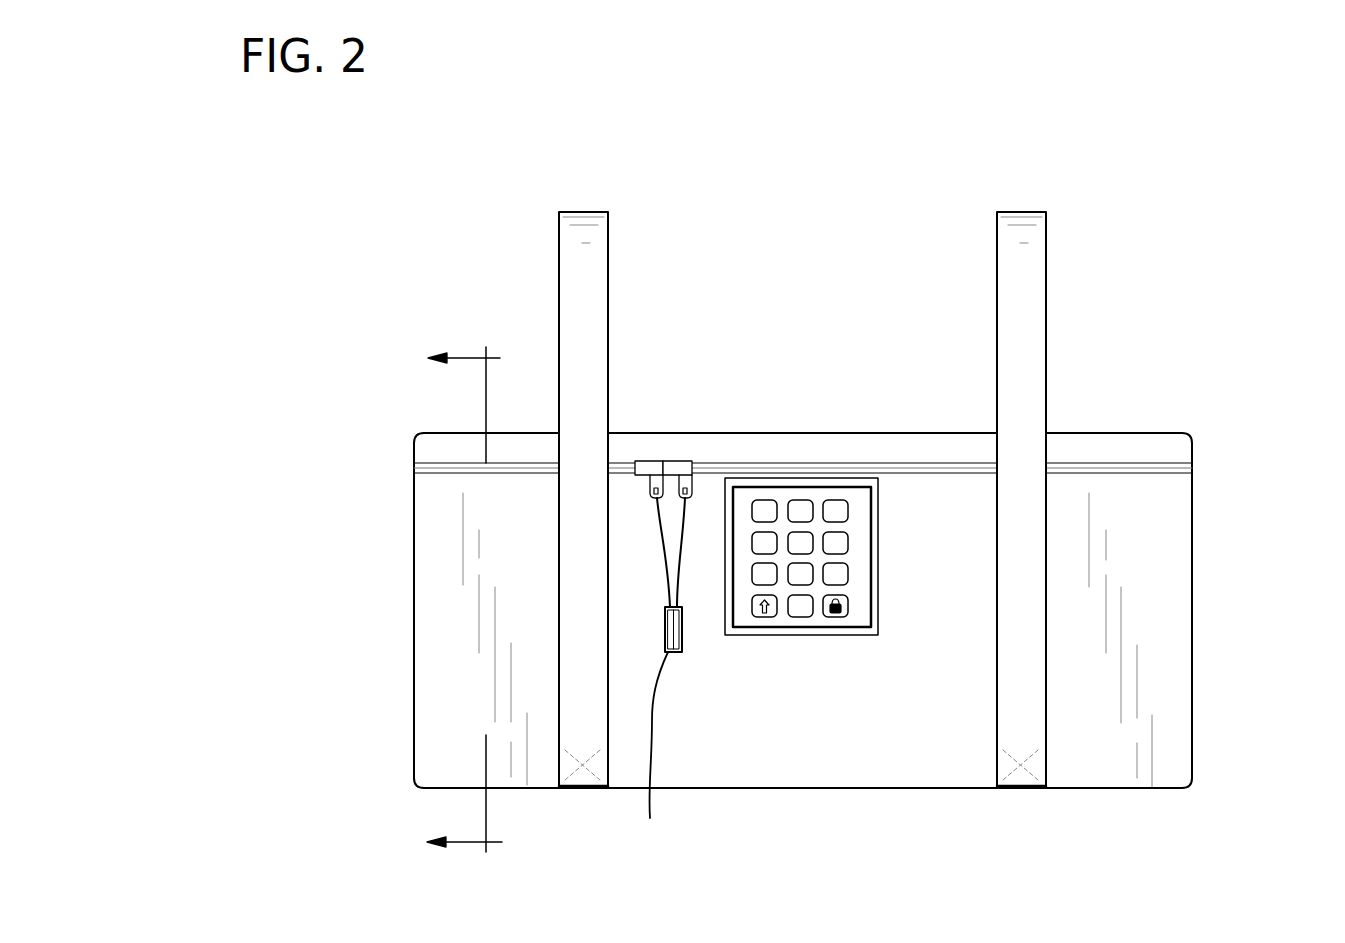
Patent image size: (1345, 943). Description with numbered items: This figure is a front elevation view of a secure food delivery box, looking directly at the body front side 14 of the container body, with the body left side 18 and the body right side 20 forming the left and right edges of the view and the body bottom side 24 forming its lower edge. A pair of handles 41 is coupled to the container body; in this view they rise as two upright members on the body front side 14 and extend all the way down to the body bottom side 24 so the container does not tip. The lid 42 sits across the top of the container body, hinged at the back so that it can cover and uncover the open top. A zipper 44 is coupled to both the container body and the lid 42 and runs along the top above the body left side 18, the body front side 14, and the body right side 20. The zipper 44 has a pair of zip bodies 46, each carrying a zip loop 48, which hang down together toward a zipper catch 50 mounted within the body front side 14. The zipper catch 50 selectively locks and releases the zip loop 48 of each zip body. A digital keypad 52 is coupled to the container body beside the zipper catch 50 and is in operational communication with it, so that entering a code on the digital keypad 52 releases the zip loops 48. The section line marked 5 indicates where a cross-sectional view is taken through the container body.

The section line 5- 5 is at (464, 605).
The body front side 14 is at (1142, 685).
The body left side 18 is at (413, 627).
The body right side 20 is at (1192, 625).
The body bottom side 24 is at (887, 788).
The pair of handles 41 is at (1010, 262).
The lid 42 is at (1095, 443).
The zipper 44 is at (903, 463).
The zip bodies 46 is at (680, 467).
The zip loop 48 is at (667, 630).
The zipper catch 50 is at (678, 652).
The digital keypad 52 is at (795, 608).